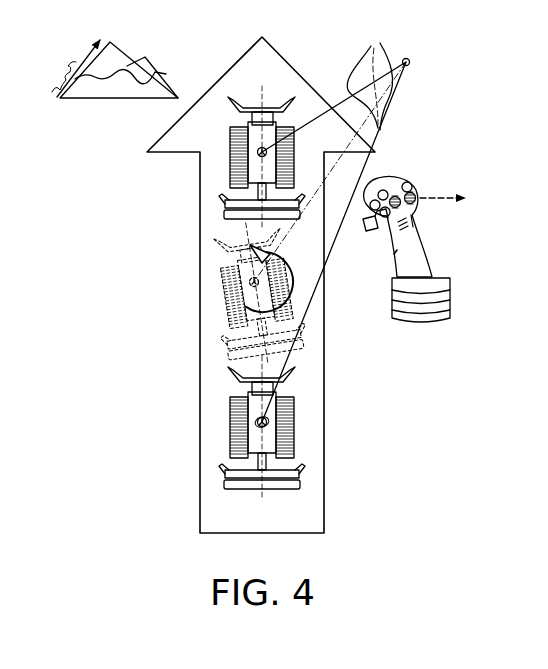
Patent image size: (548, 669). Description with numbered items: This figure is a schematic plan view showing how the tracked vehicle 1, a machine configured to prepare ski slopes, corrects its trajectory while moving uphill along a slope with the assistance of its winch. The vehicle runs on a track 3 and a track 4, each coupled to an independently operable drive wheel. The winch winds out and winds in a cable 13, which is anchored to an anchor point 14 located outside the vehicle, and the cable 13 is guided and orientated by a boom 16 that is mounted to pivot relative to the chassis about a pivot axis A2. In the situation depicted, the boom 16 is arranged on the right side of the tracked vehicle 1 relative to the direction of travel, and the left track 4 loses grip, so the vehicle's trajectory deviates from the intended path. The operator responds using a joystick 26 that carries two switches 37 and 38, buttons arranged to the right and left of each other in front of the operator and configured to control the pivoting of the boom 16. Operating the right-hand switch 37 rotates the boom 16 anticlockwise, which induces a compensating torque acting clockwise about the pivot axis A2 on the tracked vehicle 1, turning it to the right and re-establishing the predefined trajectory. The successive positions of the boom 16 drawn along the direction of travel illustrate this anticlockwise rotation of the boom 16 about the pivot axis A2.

The tracked vehicle 1 is at (210, 180).
The track 3 is at (294, 151).
The track 4 is at (229, 163).
The cable 13 is at (369, 74).
The anchor point 14 is at (409, 60).
The boom 16 is at (298, 127).
The joystick 26 is at (418, 252).
The switch 37 is at (420, 193).
The switch 38 is at (394, 196).
The pivot axis A2 is at (223, 110).